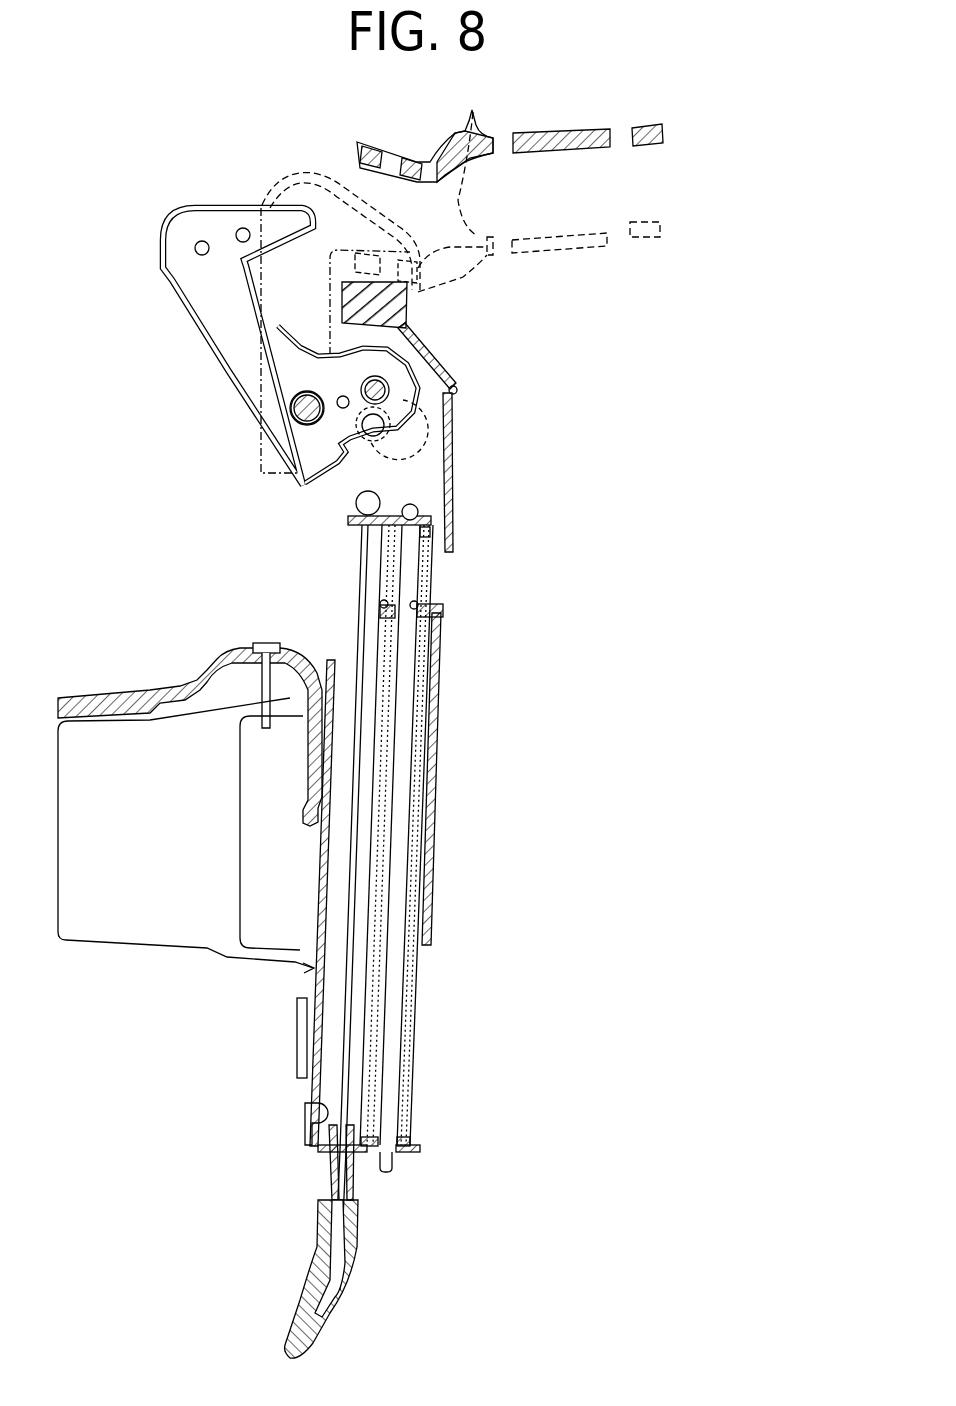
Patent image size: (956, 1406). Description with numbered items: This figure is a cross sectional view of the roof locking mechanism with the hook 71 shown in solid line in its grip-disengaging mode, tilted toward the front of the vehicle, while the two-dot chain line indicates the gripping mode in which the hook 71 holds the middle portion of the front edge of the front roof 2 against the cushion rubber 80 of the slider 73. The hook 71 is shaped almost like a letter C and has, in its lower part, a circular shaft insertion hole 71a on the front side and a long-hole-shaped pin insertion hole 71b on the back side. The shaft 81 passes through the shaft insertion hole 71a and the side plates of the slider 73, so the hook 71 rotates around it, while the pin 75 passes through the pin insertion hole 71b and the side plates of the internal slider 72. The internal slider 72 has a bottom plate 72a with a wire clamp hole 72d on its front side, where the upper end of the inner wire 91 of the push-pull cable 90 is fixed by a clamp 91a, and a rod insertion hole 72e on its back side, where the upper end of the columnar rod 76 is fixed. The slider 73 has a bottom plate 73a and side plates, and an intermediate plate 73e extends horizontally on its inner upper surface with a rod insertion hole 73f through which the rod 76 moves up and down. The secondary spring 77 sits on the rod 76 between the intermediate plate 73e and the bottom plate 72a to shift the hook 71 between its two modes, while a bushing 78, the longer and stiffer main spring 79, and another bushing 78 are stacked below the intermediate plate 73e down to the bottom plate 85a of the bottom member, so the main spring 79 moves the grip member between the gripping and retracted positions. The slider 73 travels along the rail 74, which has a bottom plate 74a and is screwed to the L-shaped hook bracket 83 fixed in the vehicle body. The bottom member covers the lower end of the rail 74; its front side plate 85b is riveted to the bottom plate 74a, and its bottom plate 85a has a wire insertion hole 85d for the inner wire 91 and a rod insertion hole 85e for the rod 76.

The front roof 2 is at (468, 125).
The hook 71 is at (277, 183).
The shaft insertion hole 71a is at (291, 408).
The pin insertion hole 71b is at (382, 386).
The pin 75 is at (457, 390).
The cushion rubber 80 is at (410, 300).
The shaft 81 is at (300, 421).
The slider 73 is at (452, 455).
The bottom plate 73a is at (437, 782).
The intermediate plate 73e is at (380, 614).
The rod insertion hole 73f is at (440, 612).
The internal slider 72 is at (347, 521).
The bottom plate 72a is at (441, 508).
The wire clamp hole 72d is at (372, 526).
The rod insertion hole 72e is at (432, 548).
The inner wire 91 is at (362, 607).
The clamp 91a is at (356, 512).
The rod 76 is at (403, 980).
The secondary spring 77 is at (431, 572).
The bushing 78 is at (441, 626).
The main spring 79 is at (410, 1043).
The hook bracket 83 is at (100, 692).
The rail 74 is at (310, 973).
The bottom plate 74a is at (305, 998).
The bottom plate 85a is at (396, 1155).
The front side plate 85b is at (304, 1135).
The wire insertion hole 85d is at (322, 1150).
The rod insertion hole 85e is at (362, 1153).
The push-pull cable 90 is at (300, 1302).